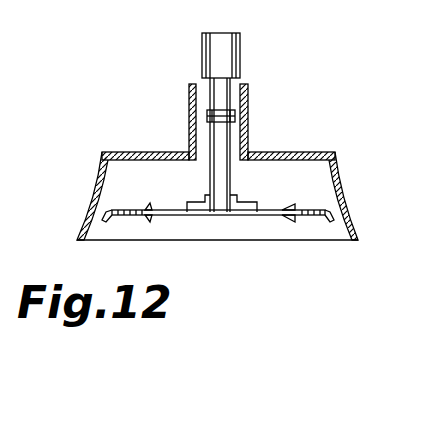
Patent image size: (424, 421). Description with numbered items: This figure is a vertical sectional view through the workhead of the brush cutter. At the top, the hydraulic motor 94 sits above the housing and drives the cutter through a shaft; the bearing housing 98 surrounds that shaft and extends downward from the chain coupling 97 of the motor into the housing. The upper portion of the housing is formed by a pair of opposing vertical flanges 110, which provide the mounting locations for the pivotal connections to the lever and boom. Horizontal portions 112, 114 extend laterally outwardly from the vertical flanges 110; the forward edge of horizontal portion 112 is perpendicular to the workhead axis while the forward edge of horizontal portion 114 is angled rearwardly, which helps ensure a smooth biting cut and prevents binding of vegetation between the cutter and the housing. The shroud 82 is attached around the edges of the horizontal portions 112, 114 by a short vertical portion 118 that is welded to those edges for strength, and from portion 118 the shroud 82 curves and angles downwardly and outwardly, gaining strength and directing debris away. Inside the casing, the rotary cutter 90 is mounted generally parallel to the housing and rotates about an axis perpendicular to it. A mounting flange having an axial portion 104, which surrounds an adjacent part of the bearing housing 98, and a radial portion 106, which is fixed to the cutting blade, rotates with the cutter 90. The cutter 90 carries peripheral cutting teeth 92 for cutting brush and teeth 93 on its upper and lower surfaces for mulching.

The hydraulic motor 94 is at (240, 50).
The chain coupling 97 is at (235, 106).
The vertical flanges 110 is at (249, 113).
The horizontal portion 114 is at (133, 152).
The horizontal portion 112 is at (300, 151).
The short vertical portion 118 is at (102, 157).
The shroud 82 is at (92, 200).
The bearing housing 98 is at (230, 180).
The radial portion 106 is at (200, 197).
The axial portion 104 is at (250, 198).
The rotary cutter 90 is at (305, 215).
The peripheral cutting teeth 92 is at (100, 241).
The teeth 93 is at (147, 217).